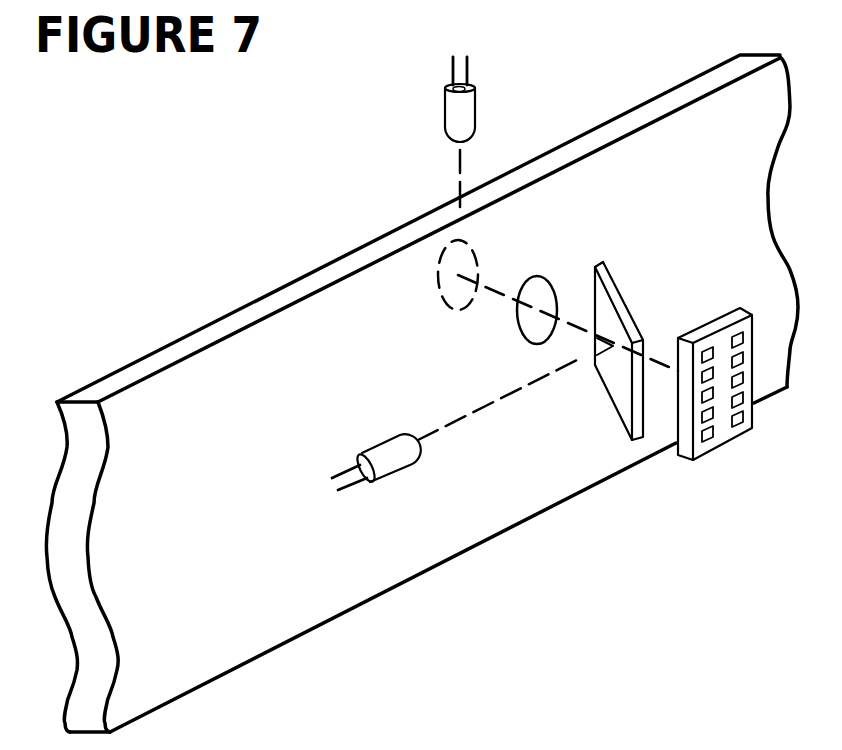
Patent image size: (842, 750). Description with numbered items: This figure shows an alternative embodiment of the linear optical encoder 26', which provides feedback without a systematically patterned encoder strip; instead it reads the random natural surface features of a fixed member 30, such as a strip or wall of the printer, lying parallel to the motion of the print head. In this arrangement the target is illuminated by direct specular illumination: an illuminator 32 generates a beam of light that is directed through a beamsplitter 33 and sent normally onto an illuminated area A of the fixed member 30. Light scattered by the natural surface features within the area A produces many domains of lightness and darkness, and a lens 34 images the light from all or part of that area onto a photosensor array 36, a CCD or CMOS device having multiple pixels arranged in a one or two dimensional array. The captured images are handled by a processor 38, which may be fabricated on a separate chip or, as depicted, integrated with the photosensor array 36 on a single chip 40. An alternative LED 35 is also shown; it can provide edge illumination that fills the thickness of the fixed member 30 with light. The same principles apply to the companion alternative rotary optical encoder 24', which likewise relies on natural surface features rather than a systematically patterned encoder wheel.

The linear optical encoder 26' is at (422, 393).
The fixed member 30 is at (535, 518).
The LED 35 is at (445, 120).
The illuminated area A is at (442, 275).
The lens 34 is at (537, 276).
The beamsplitter 33 is at (613, 293).
The illuminator 32 is at (392, 463).
The photosensor array 36 is at (714, 420).
The processor 38 is at (714, 420).
The single chip 40 is at (703, 459).
The rotary optical encoder 24' is at (791, 743).